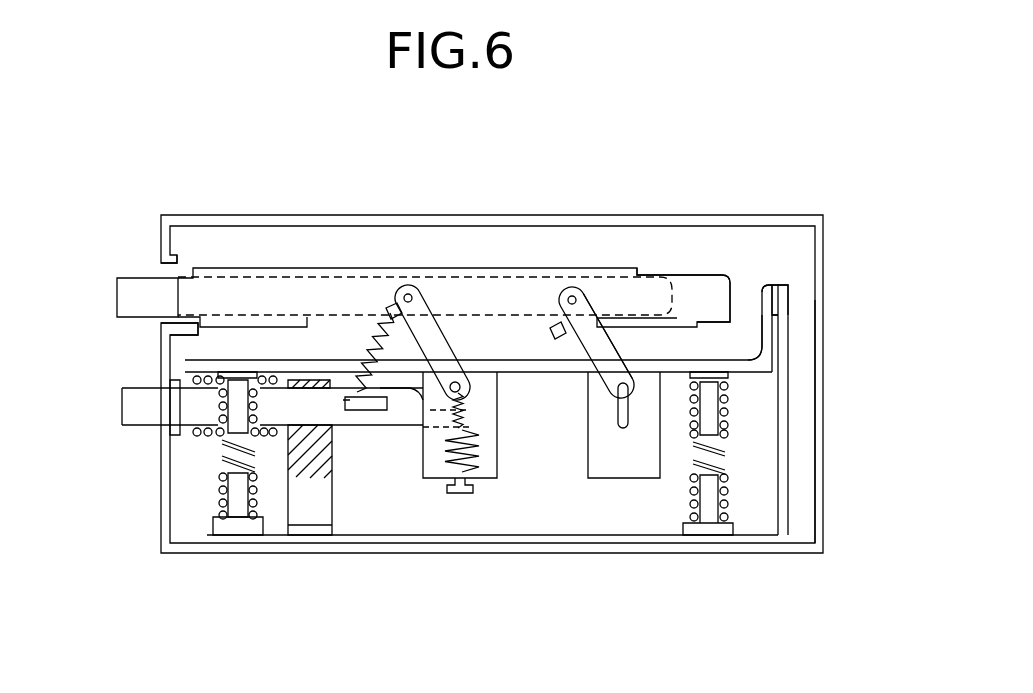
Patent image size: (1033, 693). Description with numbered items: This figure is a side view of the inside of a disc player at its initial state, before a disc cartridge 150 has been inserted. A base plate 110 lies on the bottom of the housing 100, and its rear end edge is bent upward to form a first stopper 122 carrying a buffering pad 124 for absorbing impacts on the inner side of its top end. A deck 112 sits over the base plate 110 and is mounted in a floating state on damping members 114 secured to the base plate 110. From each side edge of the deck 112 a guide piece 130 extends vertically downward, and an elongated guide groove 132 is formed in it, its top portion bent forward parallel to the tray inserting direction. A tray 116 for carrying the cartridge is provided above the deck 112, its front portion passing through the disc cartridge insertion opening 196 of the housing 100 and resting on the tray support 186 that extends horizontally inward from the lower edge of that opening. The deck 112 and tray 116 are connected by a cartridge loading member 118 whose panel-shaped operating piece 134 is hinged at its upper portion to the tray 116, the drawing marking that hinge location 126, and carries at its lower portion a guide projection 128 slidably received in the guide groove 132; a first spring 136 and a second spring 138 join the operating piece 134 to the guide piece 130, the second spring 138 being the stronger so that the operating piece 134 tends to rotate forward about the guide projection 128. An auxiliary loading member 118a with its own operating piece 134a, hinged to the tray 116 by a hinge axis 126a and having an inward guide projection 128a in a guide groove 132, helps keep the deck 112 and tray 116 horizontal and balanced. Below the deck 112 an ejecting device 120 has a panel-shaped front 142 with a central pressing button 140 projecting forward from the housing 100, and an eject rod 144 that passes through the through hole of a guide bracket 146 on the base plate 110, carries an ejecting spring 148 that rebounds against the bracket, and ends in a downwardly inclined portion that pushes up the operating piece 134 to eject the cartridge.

The housing 100 is at (440, 552).
The base plate 110 is at (492, 535).
The deck 112 is at (750, 354).
The damping members 114 is at (729, 500).
The tray 116 is at (295, 268).
The cartridge loading member 118 is at (582, 286).
The auxiliary loading member 118a is at (605, 322).
The ejecting device 120 is at (188, 440).
The first stopper 122 is at (786, 445).
The buffering pad 124 is at (772, 295).
The first lever 126 is at (408, 286).
The hinge axis 126a is at (498, 344).
The guide projection 128 is at (465, 372).
The guide projection 128a is at (728, 278).
The guide piece 130 is at (490, 470).
The guide groove 132 is at (620, 417).
The operating piece 134 is at (460, 323).
The operating piece 134a is at (616, 310).
The first spring 136 is at (368, 303).
The second spring 138 is at (448, 427).
The pressing button 140 is at (122, 402).
The front 142 is at (172, 417).
The eject rod 144 is at (203, 402).
The guide bracket 146 is at (317, 510).
The ejecting spring 148 is at (208, 435).
The disc cartridge 150 is at (118, 291).
The tray support 186 is at (188, 322).
The disc cartridge insertion opening 196 is at (145, 268).